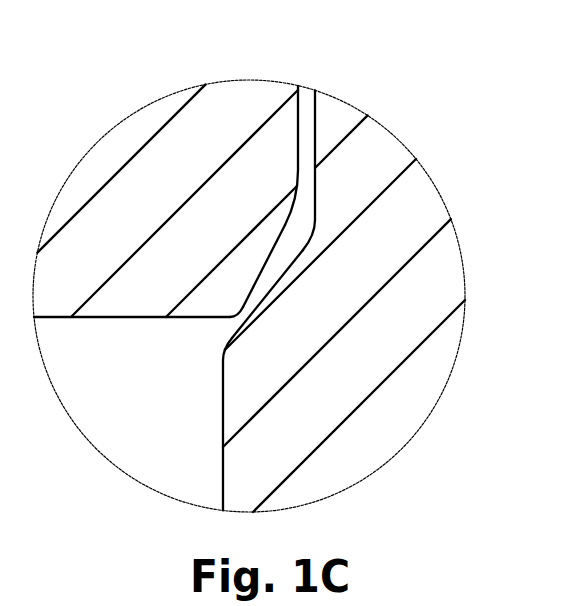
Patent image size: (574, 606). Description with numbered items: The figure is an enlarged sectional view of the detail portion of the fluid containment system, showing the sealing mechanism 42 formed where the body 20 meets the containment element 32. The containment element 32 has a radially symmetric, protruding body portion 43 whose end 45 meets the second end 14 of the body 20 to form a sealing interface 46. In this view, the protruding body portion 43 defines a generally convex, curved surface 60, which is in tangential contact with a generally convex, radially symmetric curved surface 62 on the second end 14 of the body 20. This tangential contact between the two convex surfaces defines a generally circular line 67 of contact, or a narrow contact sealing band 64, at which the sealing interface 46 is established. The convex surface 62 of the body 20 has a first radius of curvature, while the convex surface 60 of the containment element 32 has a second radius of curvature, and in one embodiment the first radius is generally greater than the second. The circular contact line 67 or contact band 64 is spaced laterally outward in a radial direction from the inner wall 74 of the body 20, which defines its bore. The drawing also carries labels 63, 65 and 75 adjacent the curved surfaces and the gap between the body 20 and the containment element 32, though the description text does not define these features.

The second end 14 is at (290, 120).
The body 20 is at (221, 130).
The containment element 32 is at (423, 402).
The sealing mechanism 42 is at (440, 287).
The protruding body portion 43 is at (354, 470).
The end 45 is at (221, 485).
The sealing interface 46 is at (250, 340).
The convex, curved surface 60 is at (250, 313).
The convex, curved surface 62 is at (276, 242).
The curved transition surface 63 is at (317, 237).
The contact sealing band 64 is at (252, 335).
The slot wall surface 65 is at (317, 128).
The circular line of contact 67 is at (245, 305).
The inner wall 74 is at (128, 320).
The slot opening 75 is at (307, 94).